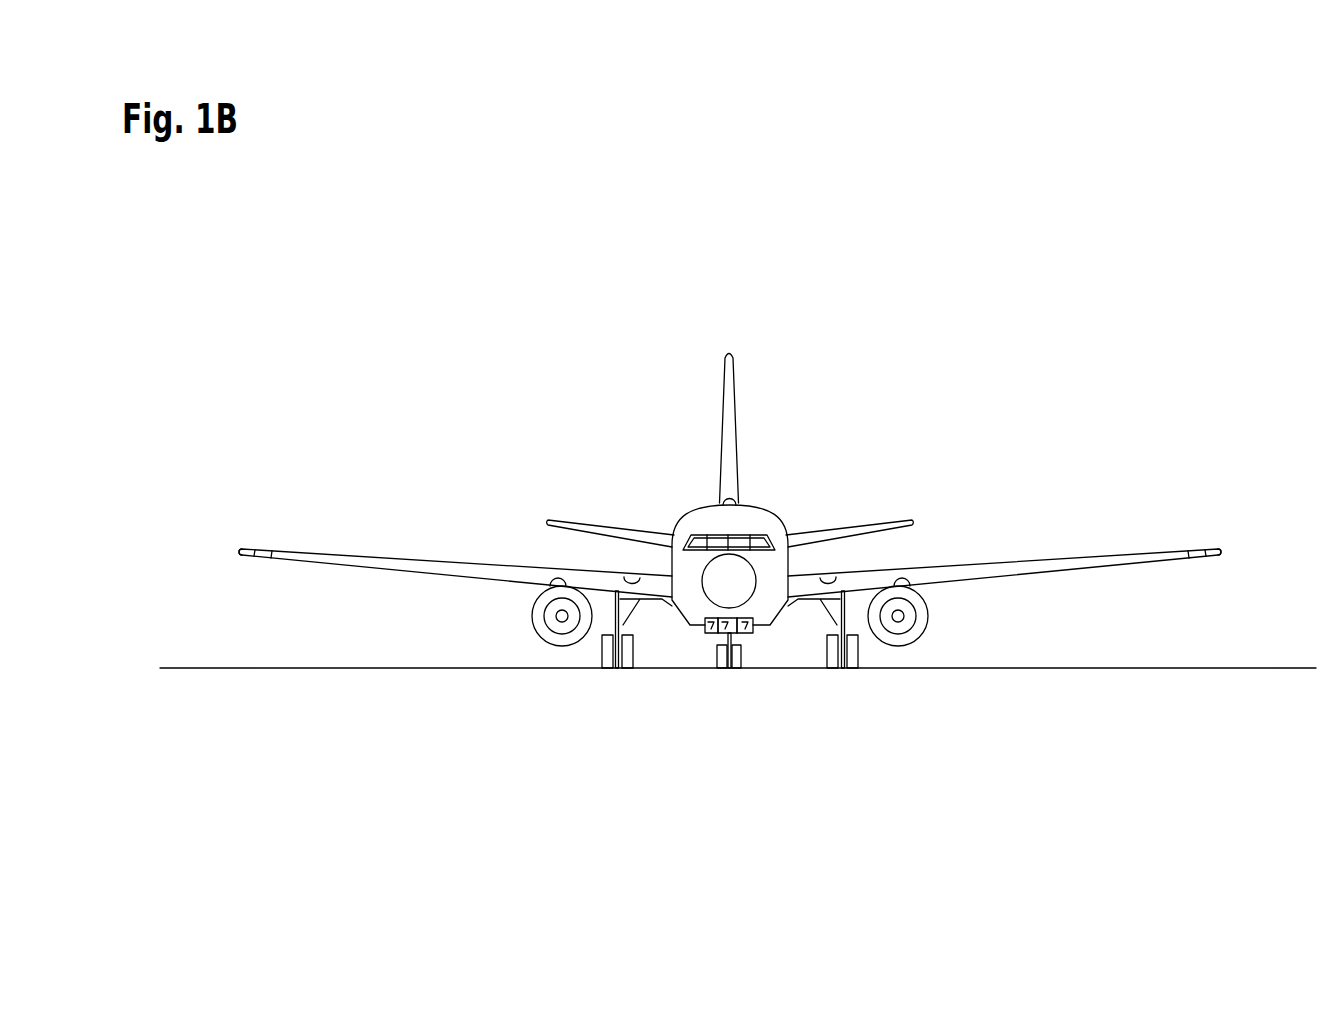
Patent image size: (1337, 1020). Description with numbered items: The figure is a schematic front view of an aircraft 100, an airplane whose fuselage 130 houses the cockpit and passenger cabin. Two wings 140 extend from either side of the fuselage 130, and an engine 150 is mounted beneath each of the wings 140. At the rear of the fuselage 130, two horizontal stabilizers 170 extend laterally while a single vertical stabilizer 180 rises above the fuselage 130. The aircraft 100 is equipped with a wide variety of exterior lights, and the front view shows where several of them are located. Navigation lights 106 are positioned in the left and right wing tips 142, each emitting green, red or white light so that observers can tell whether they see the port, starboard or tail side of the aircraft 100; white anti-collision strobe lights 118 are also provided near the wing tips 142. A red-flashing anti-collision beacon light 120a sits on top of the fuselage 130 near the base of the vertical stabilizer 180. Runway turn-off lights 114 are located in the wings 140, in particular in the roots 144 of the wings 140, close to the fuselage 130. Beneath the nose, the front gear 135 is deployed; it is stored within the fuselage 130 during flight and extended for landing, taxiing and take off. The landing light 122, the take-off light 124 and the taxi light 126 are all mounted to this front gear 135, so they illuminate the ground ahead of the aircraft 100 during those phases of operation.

The aircraft 100 is at (750, 527).
The navigation lights 106 is at (248, 548).
The runway turn-off lights 114 is at (631, 576).
The white anti-collision strobe lights 118 is at (264, 549).
The red-flashing anti-collision beacon light 120a is at (734, 499).
The landing light 122 is at (754, 632).
The take-off light 124 is at (704, 628).
The taxi light 126 is at (727, 633).
The fuselage 130 is at (699, 502).
The front gear 135 is at (741, 674).
The wings 140 is at (373, 531).
The wing tips 142 is at (237, 572).
The roots 144 is at (660, 614).
The engine 150 is at (524, 609).
The horizontal stabilizers 170 is at (600, 511).
The vertical stabilizer 180 is at (750, 398).